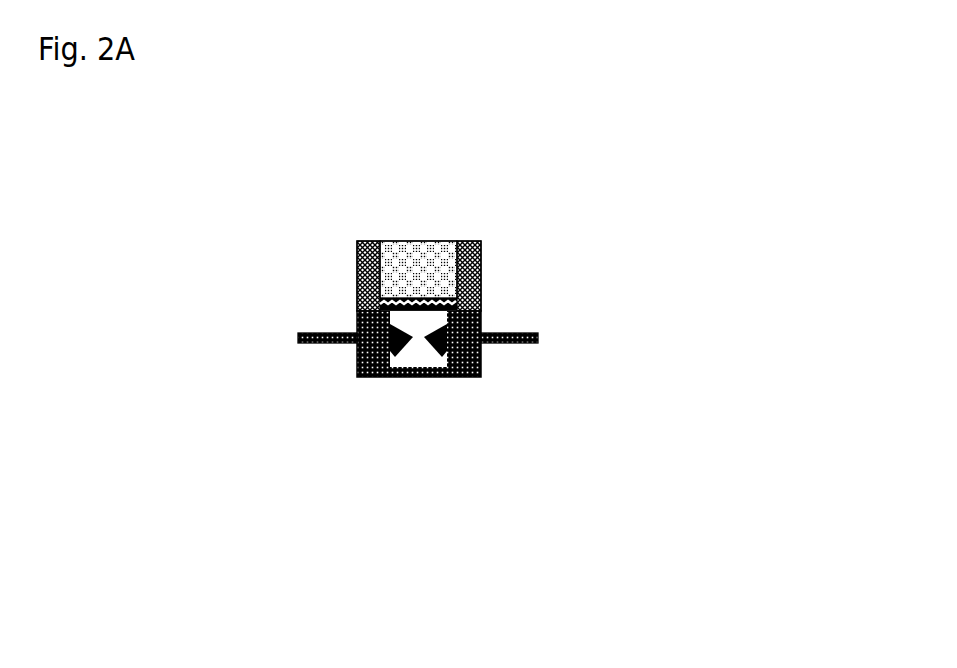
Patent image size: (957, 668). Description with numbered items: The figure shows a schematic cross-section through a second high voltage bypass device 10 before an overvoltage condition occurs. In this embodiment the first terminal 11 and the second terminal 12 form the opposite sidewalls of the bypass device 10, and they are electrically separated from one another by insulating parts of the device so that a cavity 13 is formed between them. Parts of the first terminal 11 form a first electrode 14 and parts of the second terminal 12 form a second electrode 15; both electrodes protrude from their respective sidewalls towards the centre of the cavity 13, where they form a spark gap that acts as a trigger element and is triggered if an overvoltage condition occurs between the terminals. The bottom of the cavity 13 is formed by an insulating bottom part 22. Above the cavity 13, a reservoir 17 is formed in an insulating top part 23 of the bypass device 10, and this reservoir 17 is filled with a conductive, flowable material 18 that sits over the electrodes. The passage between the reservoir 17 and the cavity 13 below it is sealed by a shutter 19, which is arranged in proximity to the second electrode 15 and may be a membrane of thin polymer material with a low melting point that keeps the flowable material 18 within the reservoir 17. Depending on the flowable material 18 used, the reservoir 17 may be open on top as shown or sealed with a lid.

The high voltage bypass device 10 is at (690, 95).
The first terminal 11 is at (318, 343).
The second terminal 12 is at (538, 343).
The cavity 13 is at (418, 358).
The first electrode 14 is at (400, 342).
The second electrode 15 is at (442, 347).
The reservoir 17 is at (417, 240).
The conductive, flowable material 18 is at (418, 273).
The shutter 19 is at (433, 305).
The insulating bottom part 22 is at (357, 373).
The insulating top part 23 is at (357, 285).